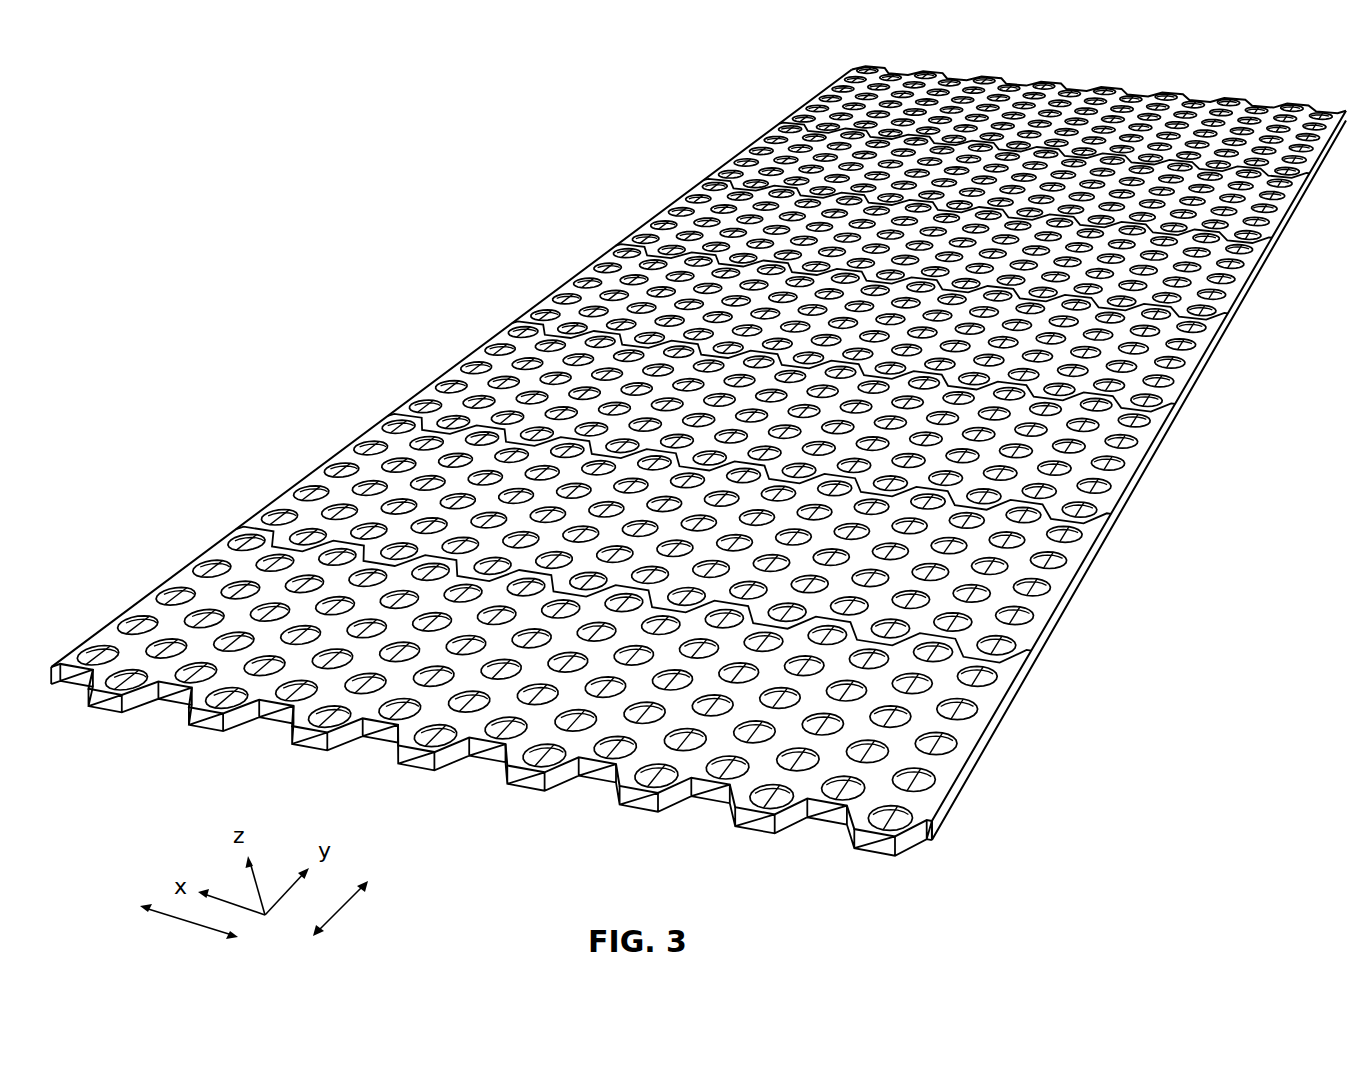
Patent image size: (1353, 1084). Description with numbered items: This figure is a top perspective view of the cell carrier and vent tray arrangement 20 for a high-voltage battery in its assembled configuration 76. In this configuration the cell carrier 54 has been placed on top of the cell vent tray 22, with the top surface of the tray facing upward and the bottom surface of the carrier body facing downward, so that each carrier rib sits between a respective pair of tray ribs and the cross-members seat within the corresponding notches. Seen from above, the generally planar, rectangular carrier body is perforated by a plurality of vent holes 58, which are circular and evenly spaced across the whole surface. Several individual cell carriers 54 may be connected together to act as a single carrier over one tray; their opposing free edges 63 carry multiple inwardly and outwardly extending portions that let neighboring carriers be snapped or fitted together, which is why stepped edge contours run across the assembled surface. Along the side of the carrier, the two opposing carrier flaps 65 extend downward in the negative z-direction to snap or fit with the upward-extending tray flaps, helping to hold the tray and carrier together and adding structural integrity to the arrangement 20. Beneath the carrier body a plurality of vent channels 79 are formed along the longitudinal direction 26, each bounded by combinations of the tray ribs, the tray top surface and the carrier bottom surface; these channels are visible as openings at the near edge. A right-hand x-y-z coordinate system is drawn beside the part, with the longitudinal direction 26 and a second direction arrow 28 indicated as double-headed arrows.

The cell carrier and vent tray arrangement 20 is at (316, 130).
The cell vent tray 22 is at (386, 748).
The longitudinal direction 26 is at (345, 915).
The first direction indicator 28 is at (180, 926).
The cell carrier 54 is at (1042, 90).
The vent holes 58 is at (1008, 655).
The free edges with inwardly extending portions 63 is at (1118, 482).
The carrier flaps 65 is at (1197, 370).
The assembled configuration 76 is at (282, 263).
The vent channels 79 is at (107, 716).